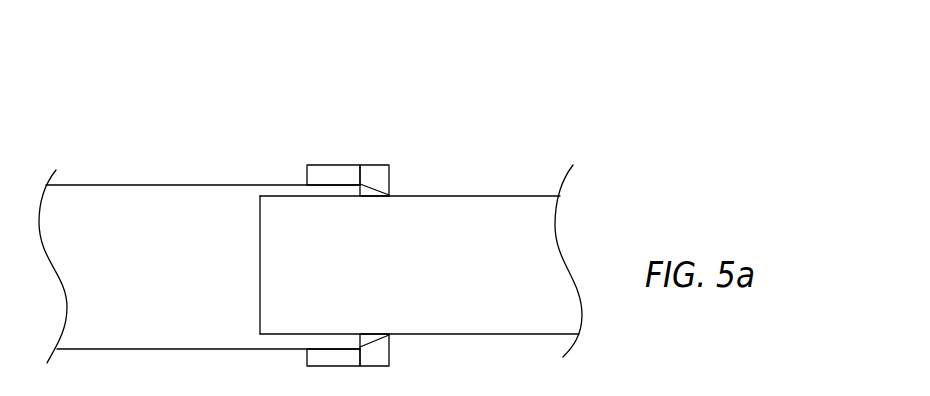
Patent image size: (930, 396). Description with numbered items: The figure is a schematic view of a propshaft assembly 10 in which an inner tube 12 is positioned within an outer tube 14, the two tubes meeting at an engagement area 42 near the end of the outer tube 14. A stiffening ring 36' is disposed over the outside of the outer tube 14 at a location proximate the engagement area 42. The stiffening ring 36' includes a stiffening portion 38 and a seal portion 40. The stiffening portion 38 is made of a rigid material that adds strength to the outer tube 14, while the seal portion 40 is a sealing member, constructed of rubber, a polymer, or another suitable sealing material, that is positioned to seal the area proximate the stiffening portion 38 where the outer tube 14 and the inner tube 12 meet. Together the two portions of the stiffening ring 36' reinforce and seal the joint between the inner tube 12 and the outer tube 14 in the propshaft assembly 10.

The propshaft assembly 10 is at (84, 86).
The inner tube 12 is at (487, 193).
The outer tube 14 is at (166, 185).
The stiffening ring 36' is at (364, 218).
The stiffening portion 38 is at (325, 165).
The seal portion 40 is at (378, 165).
The engagement area 42 is at (361, 201).